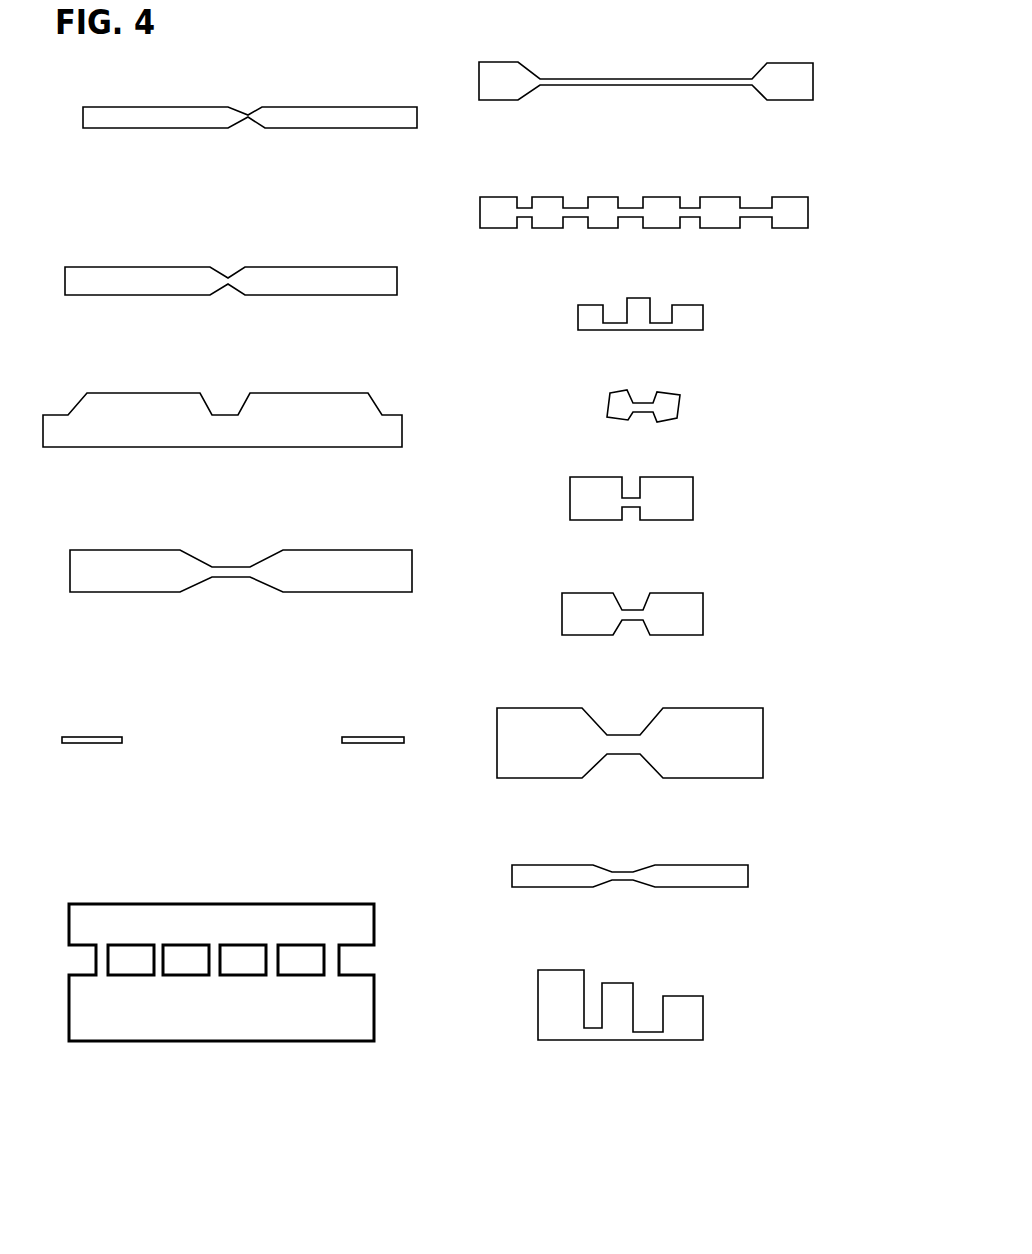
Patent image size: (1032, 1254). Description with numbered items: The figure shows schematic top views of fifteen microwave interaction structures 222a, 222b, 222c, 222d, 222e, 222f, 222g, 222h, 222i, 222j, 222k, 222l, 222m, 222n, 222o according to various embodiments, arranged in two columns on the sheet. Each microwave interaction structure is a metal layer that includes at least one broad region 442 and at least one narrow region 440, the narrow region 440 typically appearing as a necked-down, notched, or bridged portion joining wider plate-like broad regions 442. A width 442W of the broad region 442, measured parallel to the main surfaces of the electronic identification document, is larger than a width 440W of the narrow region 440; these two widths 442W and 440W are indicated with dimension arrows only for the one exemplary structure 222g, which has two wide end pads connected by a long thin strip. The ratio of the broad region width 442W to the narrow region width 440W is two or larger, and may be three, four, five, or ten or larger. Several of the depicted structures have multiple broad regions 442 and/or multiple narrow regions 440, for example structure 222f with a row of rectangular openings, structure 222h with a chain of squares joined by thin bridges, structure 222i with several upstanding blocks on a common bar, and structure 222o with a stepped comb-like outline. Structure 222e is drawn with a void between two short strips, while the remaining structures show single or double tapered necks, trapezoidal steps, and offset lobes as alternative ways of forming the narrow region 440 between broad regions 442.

The microwave interaction structure 222a is at (80, 115).
The microwave interaction structure 222b is at (78, 265).
The microwave interaction structure 222c is at (60, 407).
The microwave interaction structure 222d is at (60, 572).
The microwave interaction structure 222e is at (57, 743).
The microwave interaction structure 222f is at (58, 922).
The microwave interaction structure 222g is at (742, 65).
The microwave interaction structure 222h is at (745, 195).
The microwave interaction structure 222i is at (718, 318).
The microwave interaction structure 222j is at (698, 403).
The microwave interaction structure 222k is at (712, 503).
The microwave interaction structure 222l is at (712, 618).
The microwave interaction structure 222m is at (722, 700).
The microwave interaction structure 222n is at (725, 860).
The microwave interaction structure 222o is at (700, 982).
The narrow region 440 is at (247, 114).
The broad region 442 is at (155, 117).
The width of the narrow region 440W is at (648, 113).
The width of the broad region 442W is at (460, 40).